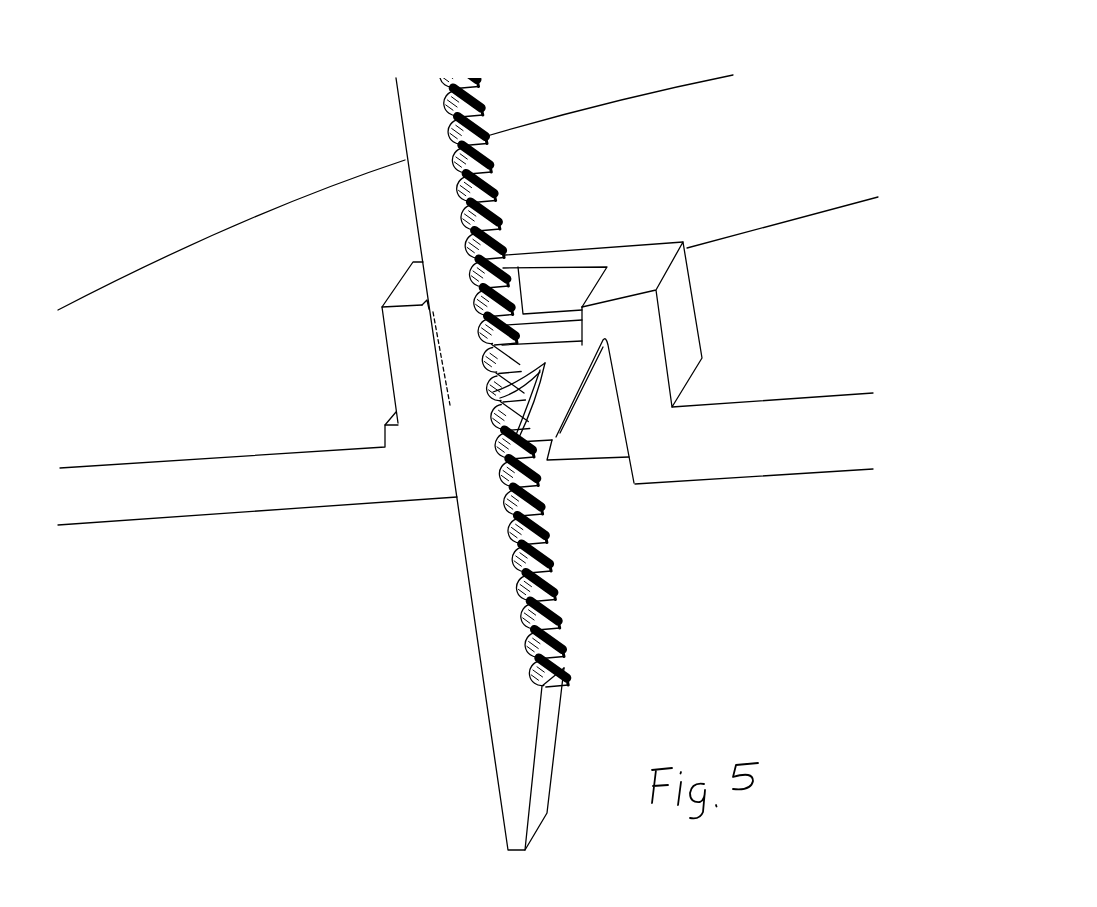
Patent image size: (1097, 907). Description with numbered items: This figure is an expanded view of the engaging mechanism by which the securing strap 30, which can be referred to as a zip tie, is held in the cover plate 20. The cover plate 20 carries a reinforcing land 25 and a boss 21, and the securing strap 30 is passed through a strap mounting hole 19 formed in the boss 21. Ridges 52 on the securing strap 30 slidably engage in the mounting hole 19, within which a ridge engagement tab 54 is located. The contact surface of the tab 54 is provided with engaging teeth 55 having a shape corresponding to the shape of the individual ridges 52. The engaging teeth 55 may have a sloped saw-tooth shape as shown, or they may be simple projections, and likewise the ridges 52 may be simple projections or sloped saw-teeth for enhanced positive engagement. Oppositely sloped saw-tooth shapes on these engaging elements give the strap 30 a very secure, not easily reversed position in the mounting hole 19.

The strap mounting hole 19 is at (540, 463).
The cover plate 20 is at (597, 115).
The boss 21 is at (680, 277).
The reinforcing land 25 is at (764, 248).
The securing strap 30 is at (498, 693).
The ridges 52 is at (553, 558).
The ridge engagement tab 54 is at (538, 345).
The engaging teeth 55 is at (545, 366).